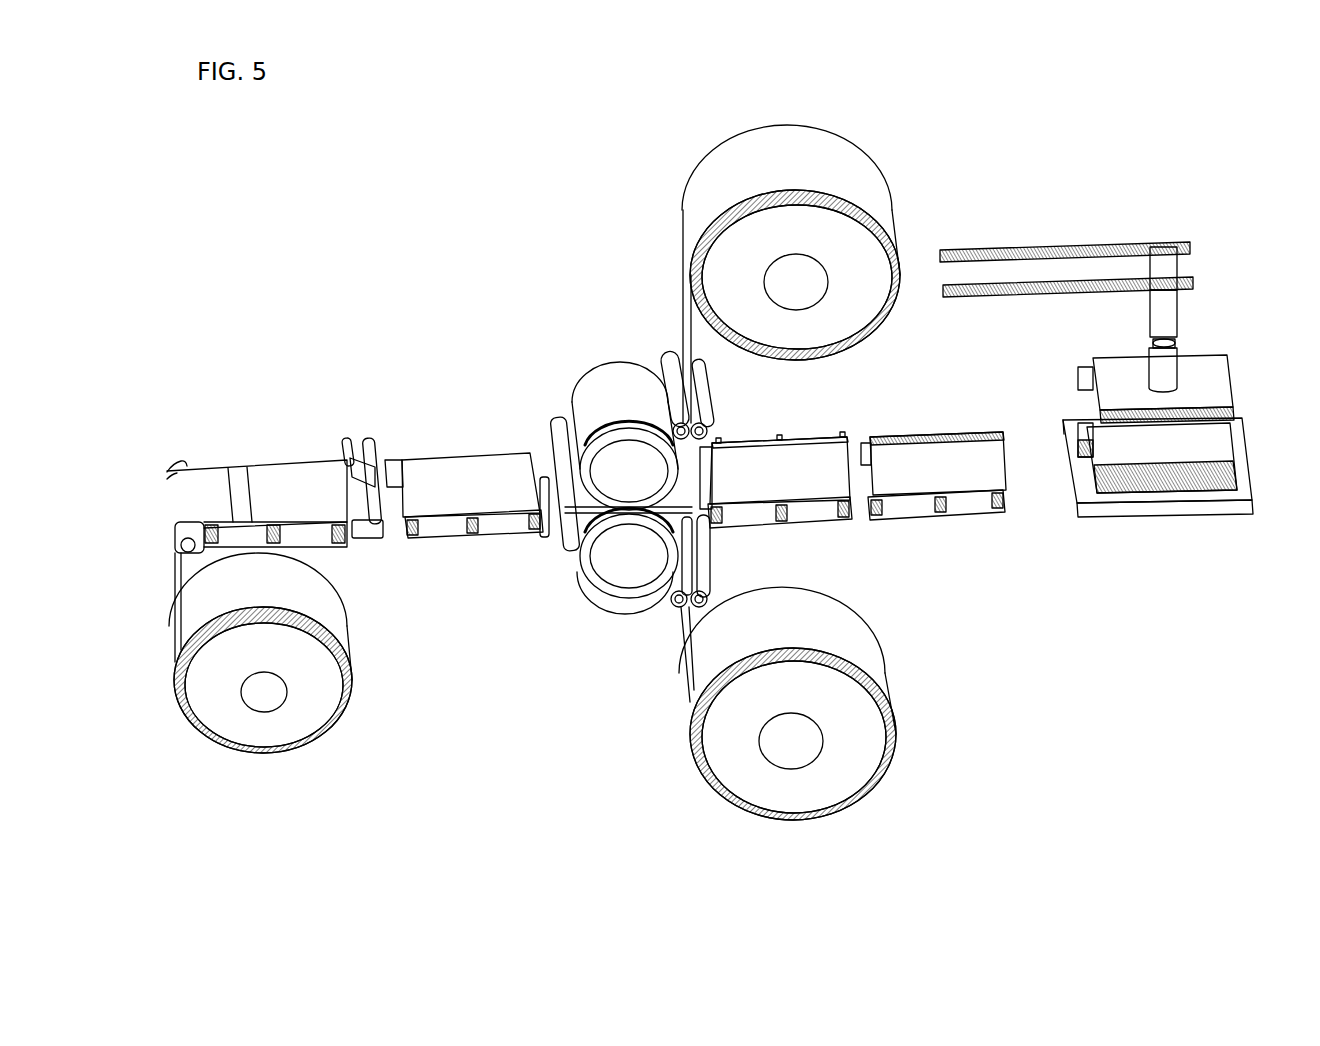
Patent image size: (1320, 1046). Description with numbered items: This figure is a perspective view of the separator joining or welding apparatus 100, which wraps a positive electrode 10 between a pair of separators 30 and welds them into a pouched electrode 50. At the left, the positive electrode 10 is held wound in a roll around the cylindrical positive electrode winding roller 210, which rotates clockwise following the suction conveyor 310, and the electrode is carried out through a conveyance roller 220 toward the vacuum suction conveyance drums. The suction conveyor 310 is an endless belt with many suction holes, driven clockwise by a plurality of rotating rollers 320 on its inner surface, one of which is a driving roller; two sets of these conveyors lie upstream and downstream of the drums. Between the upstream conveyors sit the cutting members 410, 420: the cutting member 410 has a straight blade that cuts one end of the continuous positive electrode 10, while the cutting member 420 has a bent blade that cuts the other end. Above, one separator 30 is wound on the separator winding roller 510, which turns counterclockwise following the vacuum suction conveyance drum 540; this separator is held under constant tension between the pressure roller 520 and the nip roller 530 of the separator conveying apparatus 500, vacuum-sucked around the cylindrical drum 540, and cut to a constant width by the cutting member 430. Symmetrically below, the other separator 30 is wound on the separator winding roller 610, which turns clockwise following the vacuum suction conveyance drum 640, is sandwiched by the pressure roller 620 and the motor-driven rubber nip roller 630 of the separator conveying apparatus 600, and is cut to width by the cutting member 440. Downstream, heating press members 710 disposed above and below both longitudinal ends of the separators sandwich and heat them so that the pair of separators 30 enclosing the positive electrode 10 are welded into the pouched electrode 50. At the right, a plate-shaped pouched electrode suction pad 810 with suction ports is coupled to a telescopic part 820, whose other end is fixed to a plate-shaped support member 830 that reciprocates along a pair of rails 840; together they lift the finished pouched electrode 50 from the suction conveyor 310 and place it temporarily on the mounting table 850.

The separator joining or welding apparatus 100 is at (236, 138).
The positive electrode 10 is at (255, 468).
The separator 30 is at (885, 215).
The pouched electrode 50 is at (905, 440).
The positive electrode winding roller 210 is at (296, 738).
The conveyance roller 220 is at (184, 465).
The suction conveyor 310 is at (300, 542).
The rotating roller 320 is at (340, 545).
The cutting member 410 is at (378, 450).
The cutting member 420 is at (342, 452).
The cutting member 430 is at (380, 538).
The cutting member 440 is at (560, 548).
The separator conveying apparatus 500 is at (751, 282).
The separator winding roller 510 is at (828, 345).
The pressure roller 520 is at (672, 395).
The nip roller 530 is at (705, 350).
The vacuum suction conveyance drum 540 is at (600, 372).
The separator conveying apparatus 600 is at (753, 677).
The separator winding roller 610 is at (832, 798).
The pressure roller 620 is at (670, 606).
The nip roller 630 is at (712, 600).
The vacuum suction conveyance drum 640 is at (610, 598).
The heating press member 710 is at (722, 448).
The pouched electrode suction pad 810 is at (1195, 358).
The telescopic part 820 is at (1148, 312).
The support member 830 is at (1180, 265).
The pair of rails 840 is at (1040, 282).
The mounting table 850 is at (1175, 500).